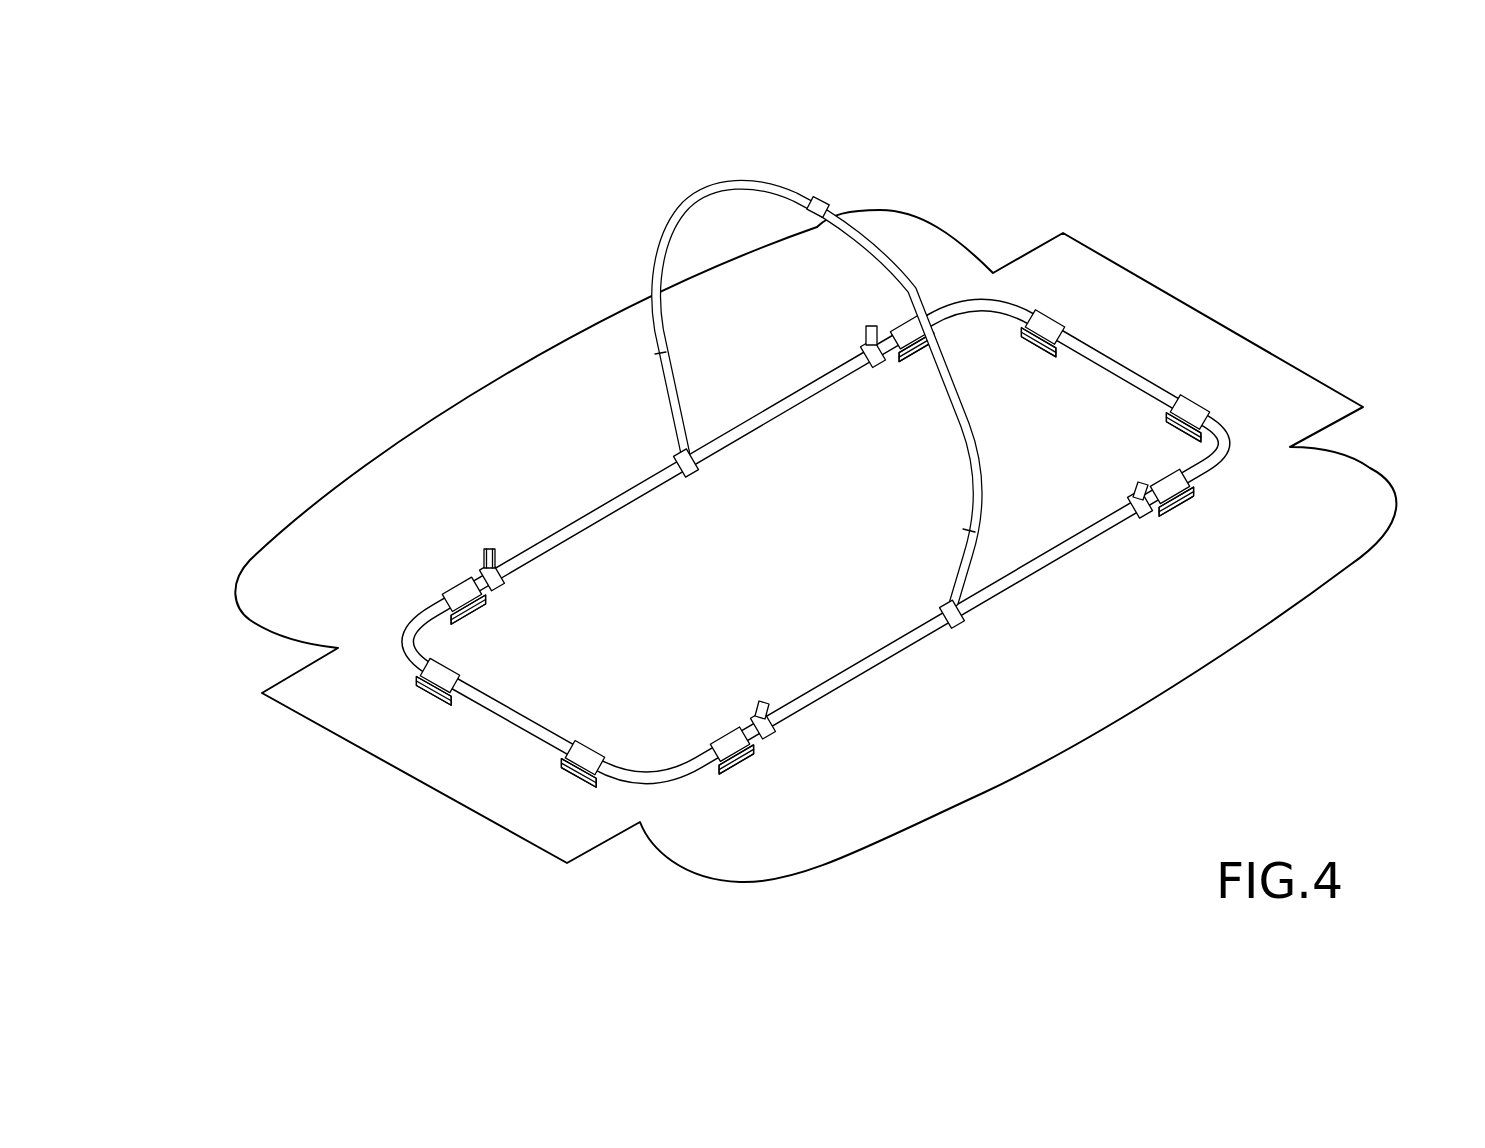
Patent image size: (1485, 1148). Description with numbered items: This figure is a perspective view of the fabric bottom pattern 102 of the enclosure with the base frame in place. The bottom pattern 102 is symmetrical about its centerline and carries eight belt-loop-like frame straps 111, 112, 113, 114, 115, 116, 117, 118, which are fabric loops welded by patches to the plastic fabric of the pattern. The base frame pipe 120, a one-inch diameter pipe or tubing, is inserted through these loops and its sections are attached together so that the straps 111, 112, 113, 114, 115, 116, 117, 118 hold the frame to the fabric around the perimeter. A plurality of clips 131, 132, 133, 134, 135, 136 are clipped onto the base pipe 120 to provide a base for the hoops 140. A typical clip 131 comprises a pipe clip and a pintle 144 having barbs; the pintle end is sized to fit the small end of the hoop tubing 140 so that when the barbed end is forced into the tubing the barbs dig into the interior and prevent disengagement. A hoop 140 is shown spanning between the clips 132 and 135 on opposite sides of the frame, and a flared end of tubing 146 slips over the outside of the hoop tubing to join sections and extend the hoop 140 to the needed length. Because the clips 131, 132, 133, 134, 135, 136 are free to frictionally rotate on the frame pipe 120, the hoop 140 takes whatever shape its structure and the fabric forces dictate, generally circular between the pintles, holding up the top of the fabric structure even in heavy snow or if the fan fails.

The bottom pattern 102 is at (577, 337).
The frame strap 111 is at (905, 360).
The frame strap 112 is at (1047, 317).
The frame strap 113 is at (1197, 400).
The frame strap 114 is at (1197, 502).
The frame strap 115 is at (730, 767).
The frame strap 116 is at (582, 773).
The frame strap 117 is at (430, 683).
The frame strap 118 is at (435, 590).
The base frame pipe 120 is at (860, 678).
The clip 131 is at (492, 578).
The clip 132 is at (690, 477).
The clip 133 is at (863, 337).
The clip 134 is at (1140, 511).
The clip 135 is at (958, 626).
The clip 136 is at (768, 731).
The hoop 140 is at (910, 280).
The pintle 144 is at (485, 550).
The flared end of tubing 146 is at (818, 203).